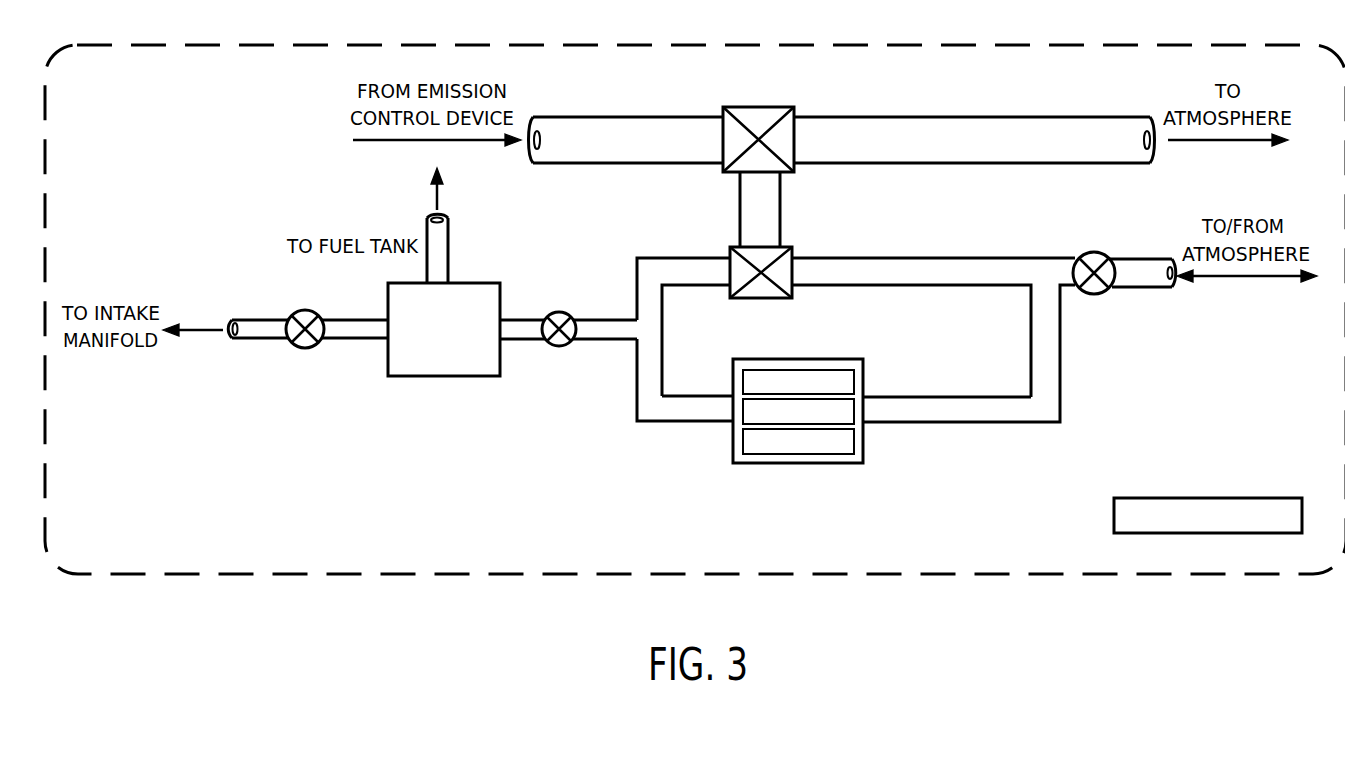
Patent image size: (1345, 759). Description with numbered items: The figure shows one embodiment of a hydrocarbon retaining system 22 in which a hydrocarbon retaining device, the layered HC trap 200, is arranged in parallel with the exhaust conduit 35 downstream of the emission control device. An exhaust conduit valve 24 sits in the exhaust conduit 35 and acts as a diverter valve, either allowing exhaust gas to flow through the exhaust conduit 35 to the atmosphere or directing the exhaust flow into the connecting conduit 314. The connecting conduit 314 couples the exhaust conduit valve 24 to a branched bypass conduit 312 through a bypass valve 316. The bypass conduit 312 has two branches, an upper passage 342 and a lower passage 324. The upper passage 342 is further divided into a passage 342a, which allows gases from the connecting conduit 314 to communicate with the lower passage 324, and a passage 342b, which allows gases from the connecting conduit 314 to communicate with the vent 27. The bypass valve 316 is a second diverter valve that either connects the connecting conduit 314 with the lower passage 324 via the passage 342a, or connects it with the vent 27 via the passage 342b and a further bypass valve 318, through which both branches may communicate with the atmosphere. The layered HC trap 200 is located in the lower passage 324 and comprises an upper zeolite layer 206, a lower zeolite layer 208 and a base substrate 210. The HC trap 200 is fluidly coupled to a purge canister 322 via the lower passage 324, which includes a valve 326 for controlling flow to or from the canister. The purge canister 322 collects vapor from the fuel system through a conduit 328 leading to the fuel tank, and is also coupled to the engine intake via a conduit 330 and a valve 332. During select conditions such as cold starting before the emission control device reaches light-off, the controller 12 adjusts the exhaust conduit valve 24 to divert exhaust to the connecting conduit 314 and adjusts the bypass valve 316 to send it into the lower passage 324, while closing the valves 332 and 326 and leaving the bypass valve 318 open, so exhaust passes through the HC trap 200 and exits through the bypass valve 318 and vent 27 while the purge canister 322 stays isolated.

The hydrocarbon retaining system 22 is at (1072, 45).
The exhaust conduit valve 24 is at (742, 107).
The exhaust conduit 35 is at (903, 117).
The connecting conduit 314 is at (777, 212).
The bypass valve 316 is at (790, 247).
The upper passage 342 is at (851, 297).
The passage 342a is at (683, 258).
The passage 342b is at (883, 258).
The lower passage 324 is at (662, 424).
The bypass conduit 312 is at (1089, 415).
The HC trap 200 is at (818, 394).
The upper layer 206 is at (798, 382).
The lower layer 208 is at (798, 411).
The base substrate 210 is at (798, 441).
The bypass valve 318 is at (1100, 252).
The vent 27 is at (1147, 288).
The purge canister 322 is at (430, 377).
The conduit 328 is at (450, 253).
The conduit 330 is at (253, 339).
The valve 332 is at (300, 310).
The valve 326 is at (560, 312).
The controller 12 is at (1225, 497).